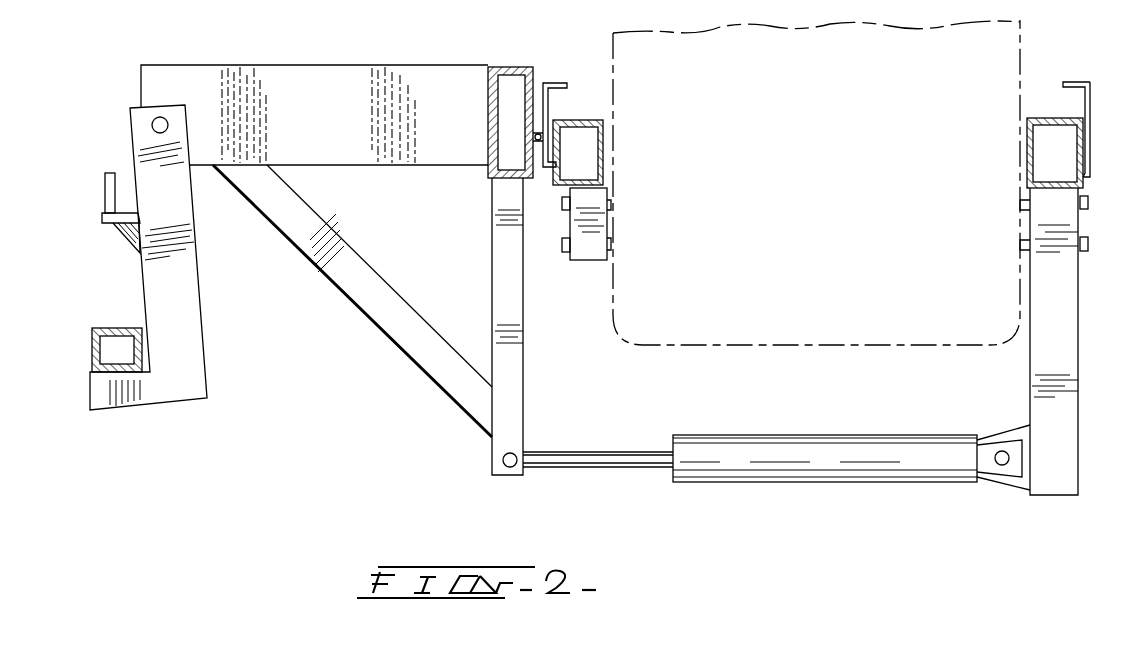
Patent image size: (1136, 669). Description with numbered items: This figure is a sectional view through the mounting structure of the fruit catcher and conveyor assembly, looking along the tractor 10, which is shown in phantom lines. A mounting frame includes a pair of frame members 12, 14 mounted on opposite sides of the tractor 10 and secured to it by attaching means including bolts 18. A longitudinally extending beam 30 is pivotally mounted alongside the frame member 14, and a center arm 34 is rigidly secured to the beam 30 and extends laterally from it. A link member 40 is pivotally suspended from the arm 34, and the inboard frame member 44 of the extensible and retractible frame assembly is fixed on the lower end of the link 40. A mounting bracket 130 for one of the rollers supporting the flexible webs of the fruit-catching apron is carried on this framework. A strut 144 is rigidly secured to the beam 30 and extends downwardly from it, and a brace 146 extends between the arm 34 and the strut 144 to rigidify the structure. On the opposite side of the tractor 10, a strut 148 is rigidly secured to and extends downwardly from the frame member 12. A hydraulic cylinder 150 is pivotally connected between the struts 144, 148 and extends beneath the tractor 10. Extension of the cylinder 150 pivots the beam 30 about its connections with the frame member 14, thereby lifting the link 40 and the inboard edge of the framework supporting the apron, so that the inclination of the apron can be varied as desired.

The tractor 10 is at (805, 161).
The frame member 12 is at (1047, 118).
The frame member 14 is at (587, 120).
The bolts 18 is at (562, 246).
The beam 30 is at (490, 92).
The arm 34 is at (331, 65).
The link member 40 is at (187, 298).
The inboard frame member 44 is at (120, 328).
The mounting bracket 130 is at (108, 193).
The strut 144 is at (504, 268).
The brace 146 is at (373, 312).
The strut 148 is at (1040, 352).
The hydraulic cylinder 150 is at (798, 482).